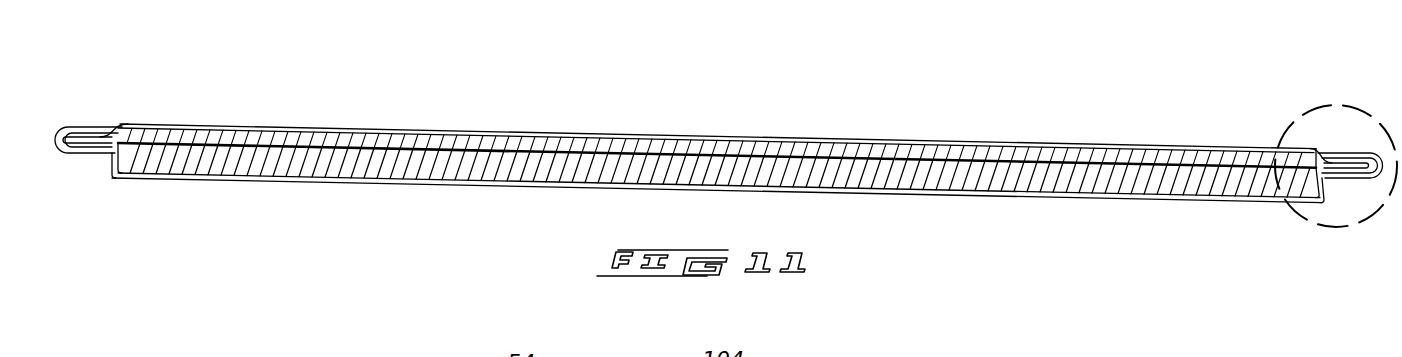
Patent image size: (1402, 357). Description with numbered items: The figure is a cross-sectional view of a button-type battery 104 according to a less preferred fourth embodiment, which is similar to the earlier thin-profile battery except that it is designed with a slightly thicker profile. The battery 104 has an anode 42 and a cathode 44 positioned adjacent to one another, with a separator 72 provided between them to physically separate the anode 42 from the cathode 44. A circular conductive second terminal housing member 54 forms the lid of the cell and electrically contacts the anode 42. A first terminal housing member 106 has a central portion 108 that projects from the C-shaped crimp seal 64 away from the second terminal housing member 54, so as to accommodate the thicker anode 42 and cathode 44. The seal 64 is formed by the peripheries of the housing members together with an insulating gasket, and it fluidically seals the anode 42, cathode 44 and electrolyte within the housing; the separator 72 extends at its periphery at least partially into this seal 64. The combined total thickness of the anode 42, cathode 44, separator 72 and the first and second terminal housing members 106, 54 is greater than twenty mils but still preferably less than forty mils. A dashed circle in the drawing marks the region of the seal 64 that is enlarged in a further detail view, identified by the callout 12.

The button-type battery 104 is at (468, 92).
The anode 42 is at (588, 147).
The separator 72 is at (665, 147).
The second terminal housing member 54 is at (943, 139).
The fluid-tight seal 64 is at (1362, 150).
The cathode 44 is at (552, 176).
The central portion 108 is at (860, 196).
The first terminal housing member 106 is at (972, 199).
The detail region of FIG. 12 is at (1330, 232).